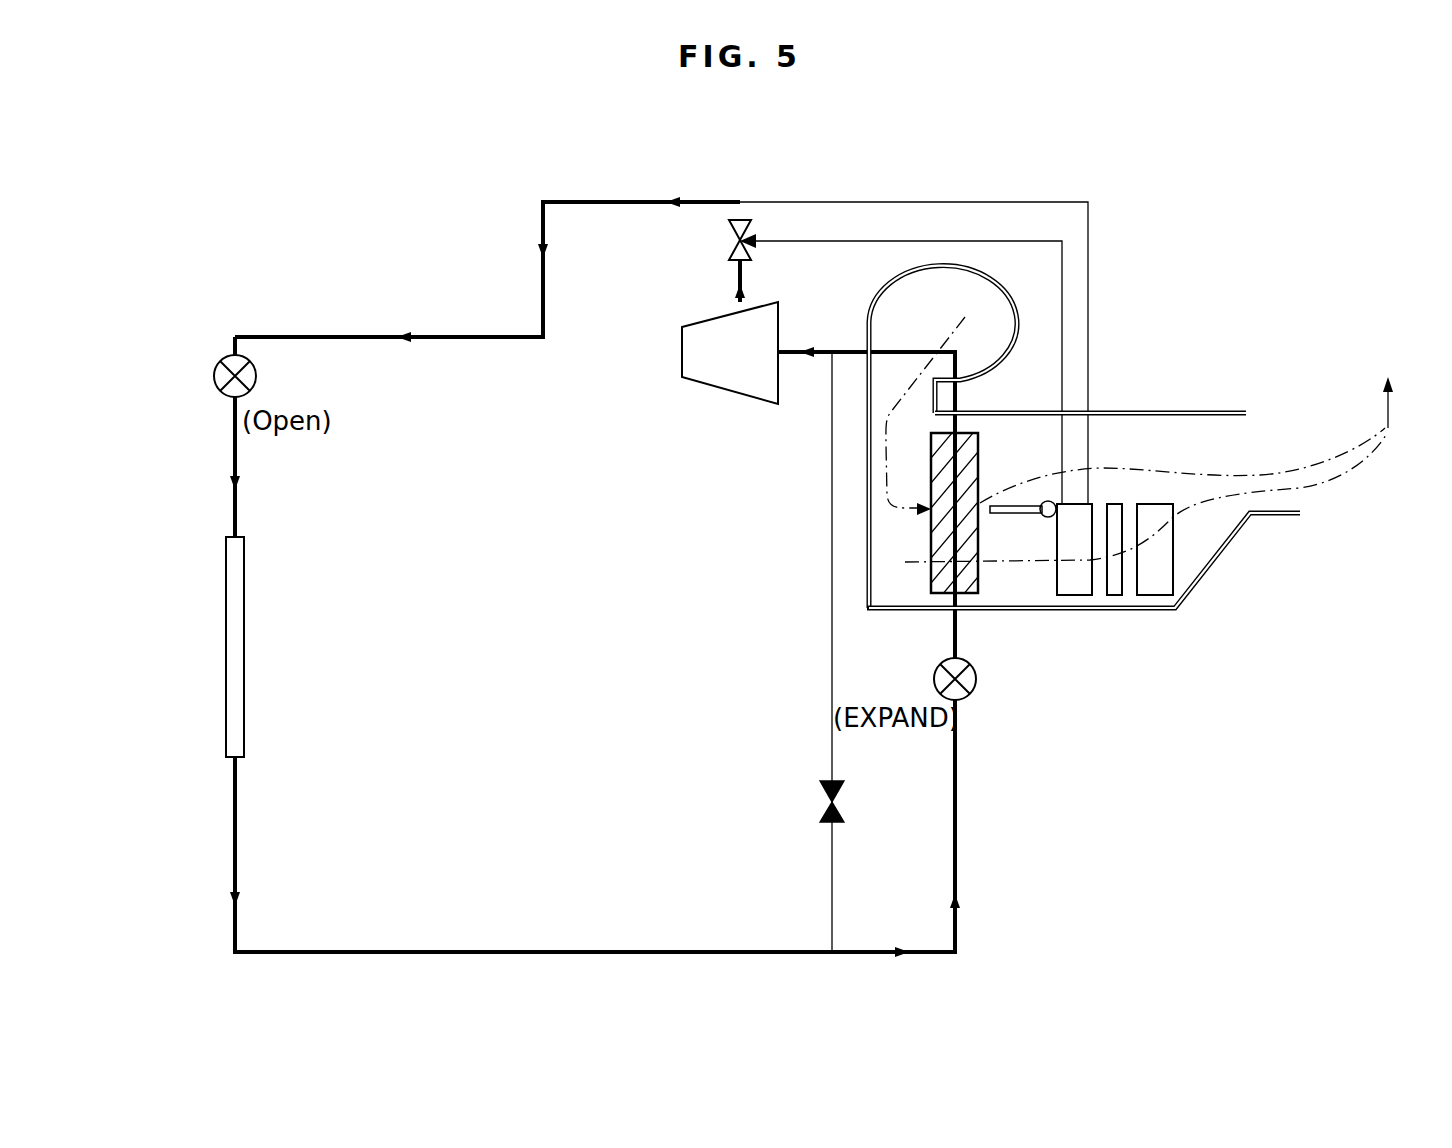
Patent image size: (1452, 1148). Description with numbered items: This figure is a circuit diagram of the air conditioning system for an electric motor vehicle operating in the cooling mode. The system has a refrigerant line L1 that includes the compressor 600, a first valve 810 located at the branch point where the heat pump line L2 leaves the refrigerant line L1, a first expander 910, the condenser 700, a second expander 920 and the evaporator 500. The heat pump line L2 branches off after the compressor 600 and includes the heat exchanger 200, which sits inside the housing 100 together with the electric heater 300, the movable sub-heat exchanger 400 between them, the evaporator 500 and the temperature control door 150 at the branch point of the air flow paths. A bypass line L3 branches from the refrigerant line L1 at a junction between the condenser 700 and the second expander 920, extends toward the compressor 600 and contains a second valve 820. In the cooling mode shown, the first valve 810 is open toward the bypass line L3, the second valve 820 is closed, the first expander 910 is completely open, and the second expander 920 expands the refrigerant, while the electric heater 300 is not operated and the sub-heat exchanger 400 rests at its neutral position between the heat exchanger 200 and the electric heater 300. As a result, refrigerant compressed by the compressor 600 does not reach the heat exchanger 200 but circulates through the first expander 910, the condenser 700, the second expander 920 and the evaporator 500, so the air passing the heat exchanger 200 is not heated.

The housing 100 is at (1207, 410).
The temperature control door 150 is at (1025, 500).
The heat exchanger 200 is at (1073, 585).
The electric heater 300 is at (1155, 583).
The sub-heat exchanger 400 is at (1115, 585).
The evaporator 500 is at (950, 545).
The compressor 600 is at (682, 365).
The condenser 700 is at (244, 645).
The first valve 810 is at (730, 243).
The second valve 820 is at (820, 806).
The first expander 910 is at (228, 358).
The second expander 920 is at (968, 695).
The refrigerant line L1 is at (466, 335).
The heat pump line L2 is at (833, 241).
The bypass line L3 is at (832, 715).